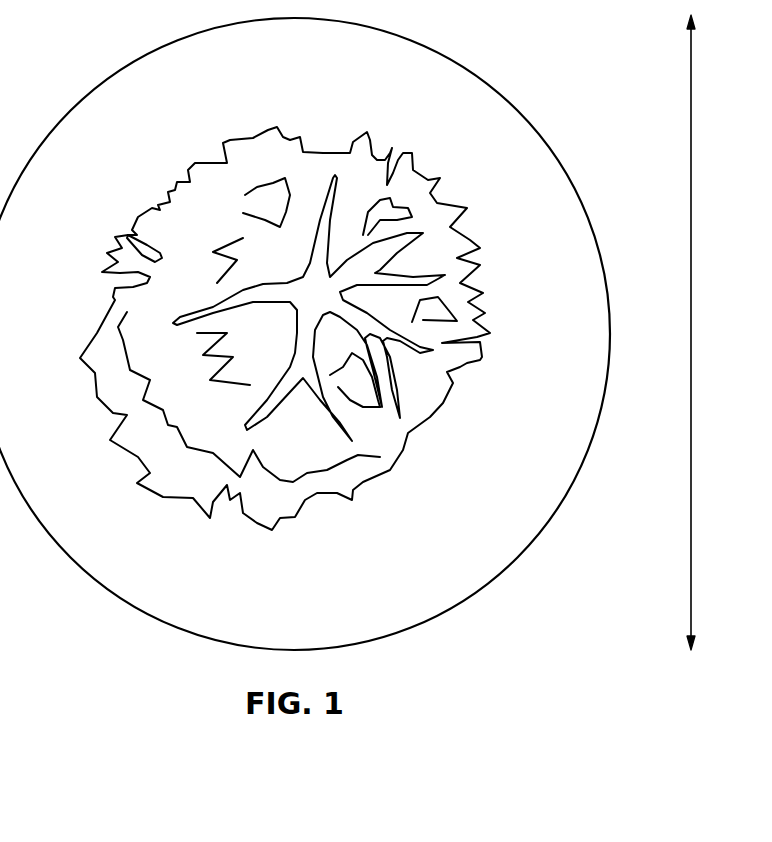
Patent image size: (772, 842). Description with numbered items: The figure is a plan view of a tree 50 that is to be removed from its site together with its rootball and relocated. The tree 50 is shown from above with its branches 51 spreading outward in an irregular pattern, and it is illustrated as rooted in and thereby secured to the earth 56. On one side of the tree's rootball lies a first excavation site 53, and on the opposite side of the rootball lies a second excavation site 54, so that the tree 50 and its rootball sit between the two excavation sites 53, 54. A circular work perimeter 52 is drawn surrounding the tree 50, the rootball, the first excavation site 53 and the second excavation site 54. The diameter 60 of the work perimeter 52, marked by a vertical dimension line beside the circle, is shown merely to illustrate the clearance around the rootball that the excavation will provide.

The tree 50 is at (375, 328).
The branches 51 is at (487, 332).
The work perimeter 52 is at (515, 105).
The first excavation site 53 is at (307, 578).
The second excavation site 54 is at (307, 103).
The earth 56 is at (480, 490).
The diameter 60 is at (690, 463).